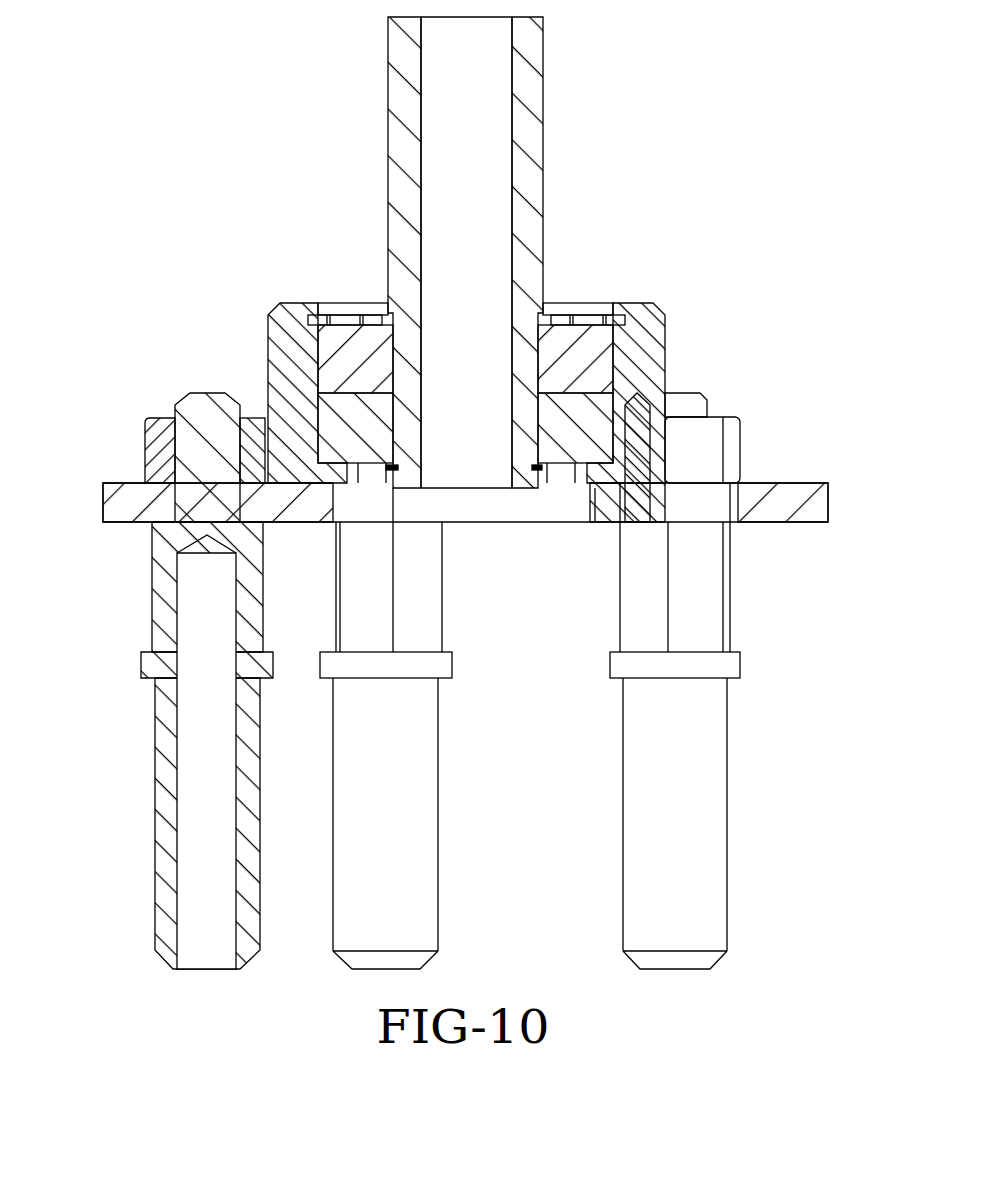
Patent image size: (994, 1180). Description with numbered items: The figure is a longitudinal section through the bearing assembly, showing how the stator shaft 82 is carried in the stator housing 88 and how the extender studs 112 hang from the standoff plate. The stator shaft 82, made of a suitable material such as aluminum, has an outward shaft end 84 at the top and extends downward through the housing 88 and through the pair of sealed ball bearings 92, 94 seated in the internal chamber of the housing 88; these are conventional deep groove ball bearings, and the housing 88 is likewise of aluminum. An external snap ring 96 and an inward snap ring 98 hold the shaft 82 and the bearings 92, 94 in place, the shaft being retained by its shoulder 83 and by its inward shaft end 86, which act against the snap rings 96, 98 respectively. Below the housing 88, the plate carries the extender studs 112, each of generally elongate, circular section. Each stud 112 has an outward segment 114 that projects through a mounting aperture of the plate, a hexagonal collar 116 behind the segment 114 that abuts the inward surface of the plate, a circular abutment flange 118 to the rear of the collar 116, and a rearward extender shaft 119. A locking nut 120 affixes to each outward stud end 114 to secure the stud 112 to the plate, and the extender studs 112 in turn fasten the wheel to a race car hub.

The stator shaft 82 is at (552, 117).
The shoulder 83 is at (388, 303).
The bore 84 is at (545, 53).
The inward shaft end 86 is at (390, 475).
The stator housing 88 is at (282, 335).
The sealed ball bearing 92 is at (563, 402).
The sealed ball bearing 94 is at (603, 348).
The external snap ring 96 is at (568, 313).
The inward snap ring 98 is at (532, 467).
The extender stud 112 is at (730, 832).
The outward segment 114 is at (183, 440).
The hexagonal collar 116 is at (160, 567).
The circular abutment flange 118 is at (147, 665).
The rearward extender shaft 119 is at (167, 790).
The locking nut 120 is at (162, 425).